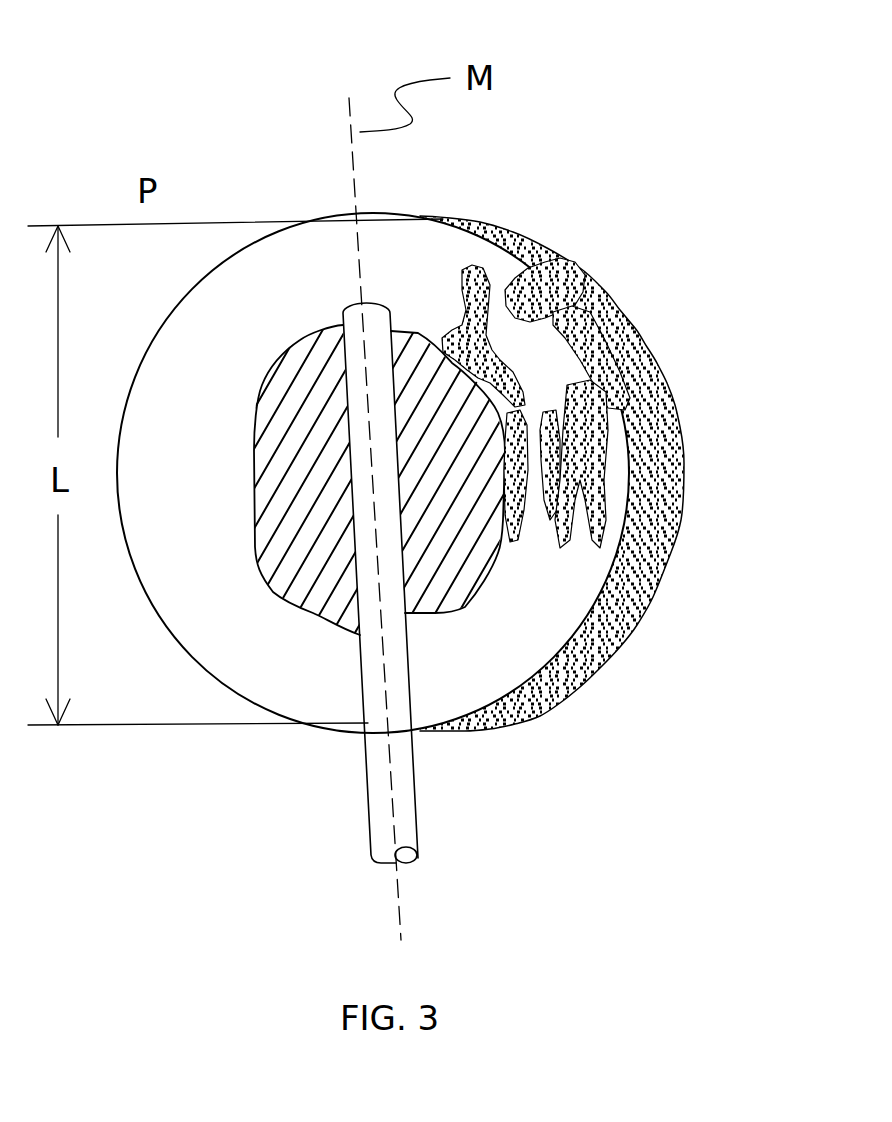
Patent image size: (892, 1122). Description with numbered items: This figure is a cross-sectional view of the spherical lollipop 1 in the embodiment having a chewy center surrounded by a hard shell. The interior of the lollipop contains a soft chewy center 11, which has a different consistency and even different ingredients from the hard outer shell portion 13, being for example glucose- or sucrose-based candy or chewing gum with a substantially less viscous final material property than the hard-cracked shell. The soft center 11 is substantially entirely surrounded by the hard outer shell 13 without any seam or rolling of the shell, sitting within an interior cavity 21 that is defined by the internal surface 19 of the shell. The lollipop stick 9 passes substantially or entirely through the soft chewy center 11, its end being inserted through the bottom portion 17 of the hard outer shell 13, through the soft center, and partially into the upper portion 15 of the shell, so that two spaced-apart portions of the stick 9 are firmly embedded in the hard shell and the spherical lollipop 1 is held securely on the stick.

The spherical lollipop 1 is at (607, 157).
The lollipop stick 9 is at (380, 793).
The soft chewy center 11 is at (467, 420).
The hard outer shell portion 13 is at (310, 275).
The upper portion of the hard outer shell 15 is at (405, 275).
The lower portion of the hard outer shell 17 is at (433, 683).
The internal surface 19 is at (497, 580).
The interior cavity 21 is at (284, 598).